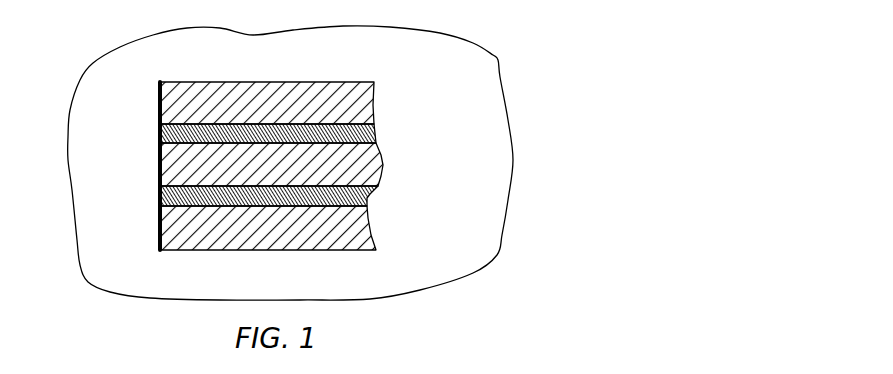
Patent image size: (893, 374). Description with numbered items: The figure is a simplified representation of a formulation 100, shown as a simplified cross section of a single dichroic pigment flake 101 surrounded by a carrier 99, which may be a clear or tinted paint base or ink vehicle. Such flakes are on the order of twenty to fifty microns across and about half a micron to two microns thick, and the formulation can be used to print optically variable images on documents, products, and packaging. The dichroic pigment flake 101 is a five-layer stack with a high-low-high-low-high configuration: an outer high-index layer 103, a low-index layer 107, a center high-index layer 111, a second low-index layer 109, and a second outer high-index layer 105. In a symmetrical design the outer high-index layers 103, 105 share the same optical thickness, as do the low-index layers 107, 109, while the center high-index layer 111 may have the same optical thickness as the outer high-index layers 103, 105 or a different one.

The formulation 100 is at (520, 70).
The carrier 99 is at (124, 248).
The dichroic pigment flake 101 is at (268, 165).
The outer high-index layer 103 is at (374, 103).
The low-index layer 107 is at (376, 140).
The center high-index layer 111 is at (383, 165).
The low-index layer 109 is at (368, 197).
The outer high-index layer 105 is at (370, 223).